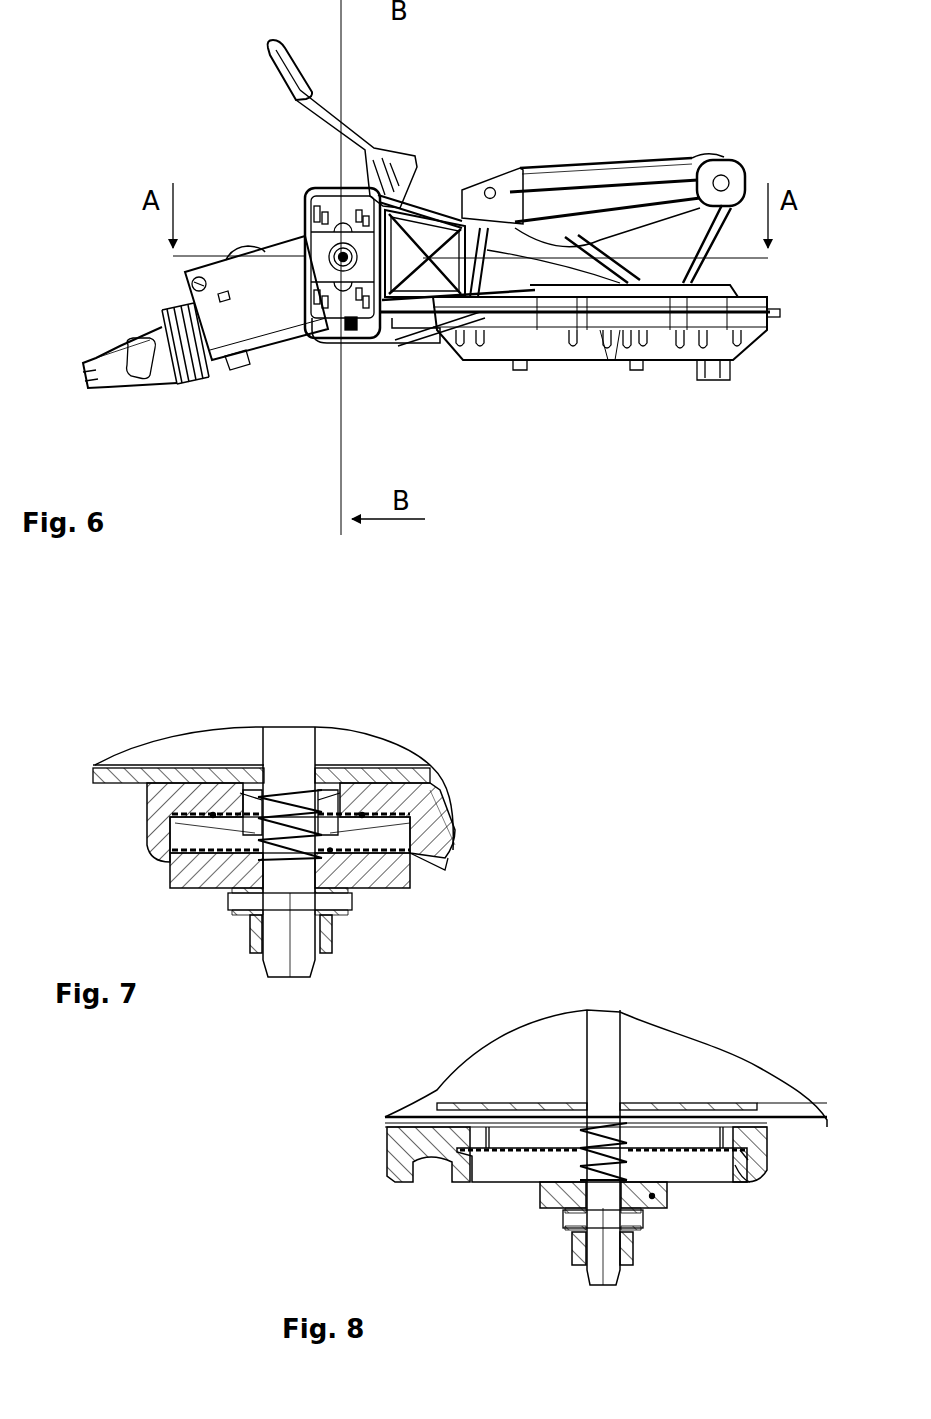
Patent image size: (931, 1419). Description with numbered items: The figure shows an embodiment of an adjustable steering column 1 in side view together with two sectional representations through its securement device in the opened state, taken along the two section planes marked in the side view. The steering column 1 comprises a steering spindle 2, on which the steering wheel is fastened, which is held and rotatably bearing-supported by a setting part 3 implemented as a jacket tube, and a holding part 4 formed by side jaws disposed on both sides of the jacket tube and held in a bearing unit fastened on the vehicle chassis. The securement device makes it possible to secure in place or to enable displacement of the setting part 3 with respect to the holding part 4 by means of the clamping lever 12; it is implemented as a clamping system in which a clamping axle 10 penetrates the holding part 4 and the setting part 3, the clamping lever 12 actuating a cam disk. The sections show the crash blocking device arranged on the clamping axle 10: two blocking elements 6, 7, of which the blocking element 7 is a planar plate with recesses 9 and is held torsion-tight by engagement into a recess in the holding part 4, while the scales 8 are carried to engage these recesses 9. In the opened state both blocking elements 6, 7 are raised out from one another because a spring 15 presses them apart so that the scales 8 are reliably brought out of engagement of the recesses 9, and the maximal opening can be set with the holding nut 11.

In FIG. 6, the steering column 1 is at (556, 430).
In FIG. 6, the steering spindle 2 is at (143, 365).
In FIG. 6, the setting part 3 is at (234, 328).
In FIG. 6, the holding part 4 is at (395, 202).
In FIG. 7, the holding part 4 is at (436, 815).
In FIG. 7, the blocking element 6 is at (190, 815).
In FIG. 8, the blocking element 6 is at (692, 1133).
In FIG. 7, the blocking element 7 is at (407, 885).
In FIG. 8, the blocking element 7 is at (668, 1208).
In FIG. 7, the scale 8 is at (228, 816).
In FIG. 8, the scale 8 is at (543, 1155).
In FIG. 8, the recess 9 is at (567, 1180).
In FIG. 6, the clamping axle 10 is at (343, 260).
In FIG. 7, the clamping axle 10 is at (297, 747).
In FIG. 8, the clamping axle 10 is at (603, 1068).
In FIG. 7, the holding nut 11 is at (332, 943).
In FIG. 6, the clamping lever 12 is at (280, 87).
In FIG. 7, the spring 15 is at (303, 803).
In FIG. 8, the spring 15 is at (608, 1143).